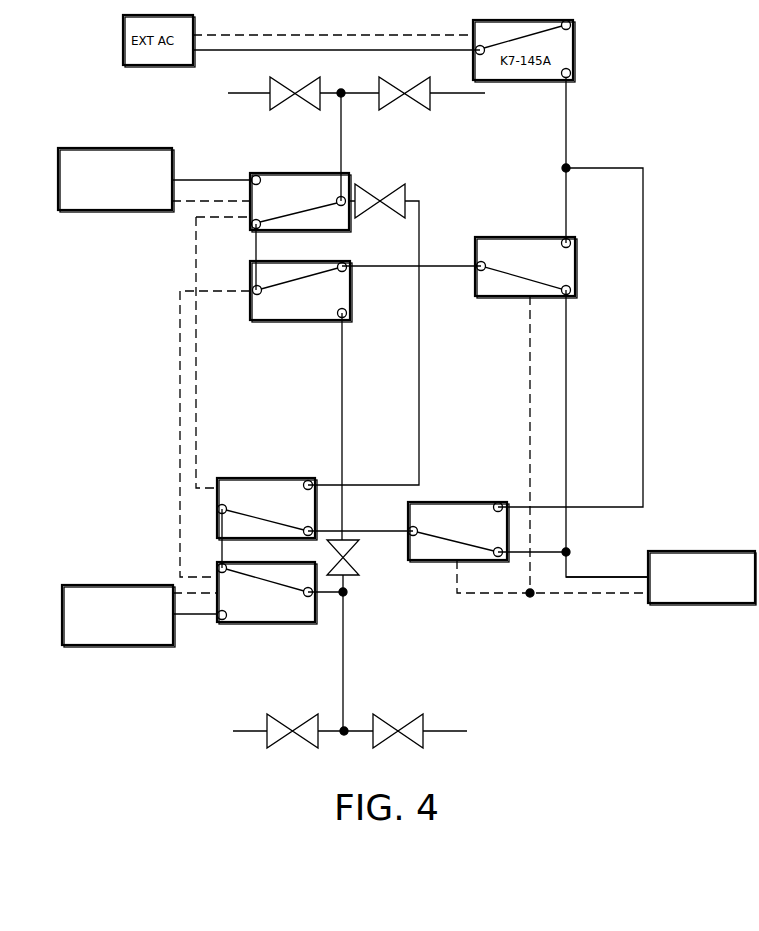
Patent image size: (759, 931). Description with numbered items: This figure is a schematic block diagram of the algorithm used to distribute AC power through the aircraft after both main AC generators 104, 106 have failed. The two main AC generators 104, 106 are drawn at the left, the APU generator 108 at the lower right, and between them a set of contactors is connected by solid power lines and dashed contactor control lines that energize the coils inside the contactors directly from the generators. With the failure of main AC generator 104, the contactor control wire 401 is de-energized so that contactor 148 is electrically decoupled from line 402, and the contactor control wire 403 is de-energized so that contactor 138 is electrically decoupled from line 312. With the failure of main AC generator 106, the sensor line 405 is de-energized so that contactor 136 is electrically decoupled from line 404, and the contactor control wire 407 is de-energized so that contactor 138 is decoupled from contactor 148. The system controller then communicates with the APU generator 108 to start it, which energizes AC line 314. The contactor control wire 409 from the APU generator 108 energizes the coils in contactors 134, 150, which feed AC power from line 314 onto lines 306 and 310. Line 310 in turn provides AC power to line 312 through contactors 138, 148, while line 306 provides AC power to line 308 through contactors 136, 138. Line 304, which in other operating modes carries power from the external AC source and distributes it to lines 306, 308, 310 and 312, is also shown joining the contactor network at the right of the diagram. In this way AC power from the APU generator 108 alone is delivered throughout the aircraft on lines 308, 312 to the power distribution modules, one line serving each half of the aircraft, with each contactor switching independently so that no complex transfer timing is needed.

The main AC generator 104 is at (75, 648).
The main AC generator 106 is at (79, 148).
The APU generator 108 is at (715, 605).
The contactor 134 is at (575, 268).
The contactor 136 is at (317, 173).
The contactor 138 is at (250, 308).
The contactor 148 is at (272, 622).
The contactor 150 is at (468, 560).
The line 304 is at (623, 168).
The line 306 is at (448, 262).
The line 308 is at (341, 130).
The line 310 is at (373, 531).
The line 312 is at (345, 677).
The AC line 314 is at (617, 577).
The contactor control wire 401 is at (193, 592).
The line 402 is at (197, 616).
The contactor control wire 403 is at (180, 500).
The line 404 is at (212, 178).
The sensor line 405 is at (192, 205).
The contactor control wire 407 is at (195, 270).
The contactor control wire 409 is at (608, 595).